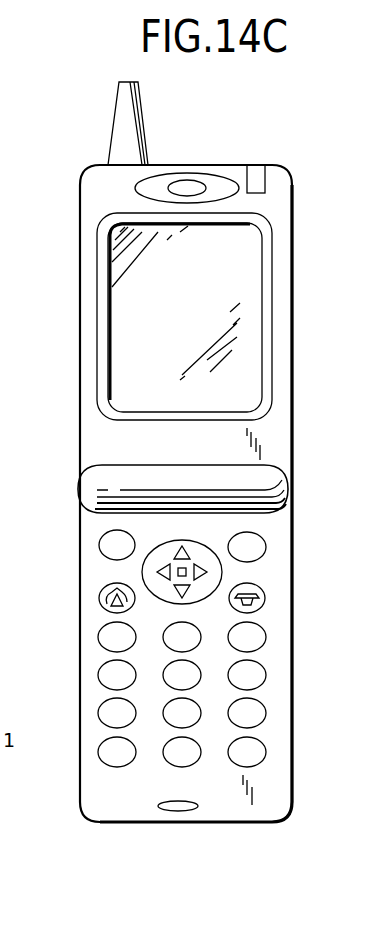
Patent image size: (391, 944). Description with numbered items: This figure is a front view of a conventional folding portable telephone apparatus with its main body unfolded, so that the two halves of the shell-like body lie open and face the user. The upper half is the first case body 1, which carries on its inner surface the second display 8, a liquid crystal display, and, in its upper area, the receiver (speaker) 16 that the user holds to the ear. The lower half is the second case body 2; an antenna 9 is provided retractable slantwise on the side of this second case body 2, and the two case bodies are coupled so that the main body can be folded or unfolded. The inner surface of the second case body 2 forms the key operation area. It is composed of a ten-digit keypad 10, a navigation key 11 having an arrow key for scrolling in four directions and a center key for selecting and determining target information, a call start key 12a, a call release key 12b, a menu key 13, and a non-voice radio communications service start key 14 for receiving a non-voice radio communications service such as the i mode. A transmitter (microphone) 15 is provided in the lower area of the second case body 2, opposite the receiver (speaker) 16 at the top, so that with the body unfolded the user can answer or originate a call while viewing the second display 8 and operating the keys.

The first case body 1 is at (206, 502).
The second case body 2 is at (175, 621).
The second display 8 is at (242, 265).
The antenna 9 is at (143, 107).
The ten-digit keypad 10 is at (260, 672).
The navigation key 11 is at (200, 548).
The call start key 12a is at (100, 602).
The call release key 12b is at (264, 604).
The menu key 13 is at (264, 553).
The non-voice radio communications service start key 14 is at (100, 543).
The transmitter (microphone) 15 is at (183, 811).
The receiver (speaker) 16 is at (197, 187).